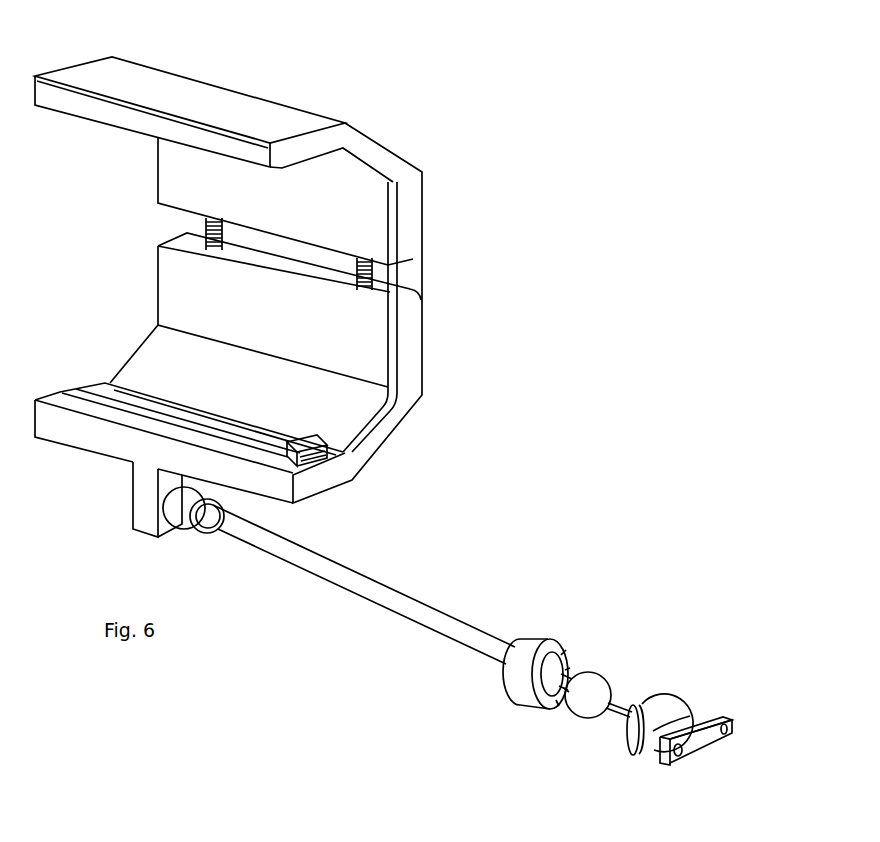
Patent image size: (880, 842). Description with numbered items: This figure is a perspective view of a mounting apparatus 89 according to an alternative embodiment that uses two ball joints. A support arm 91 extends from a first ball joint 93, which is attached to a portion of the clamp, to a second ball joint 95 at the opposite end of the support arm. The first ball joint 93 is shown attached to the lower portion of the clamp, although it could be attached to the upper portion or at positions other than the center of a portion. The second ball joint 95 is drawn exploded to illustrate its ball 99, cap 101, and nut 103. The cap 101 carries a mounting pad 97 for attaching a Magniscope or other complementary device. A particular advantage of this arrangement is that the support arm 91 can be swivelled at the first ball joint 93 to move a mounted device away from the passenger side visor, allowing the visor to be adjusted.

The mounting apparatus 89 is at (374, 62).
The support arm 91 is at (371, 582).
The first ball joint 93 is at (182, 523).
The second ball joint 95 is at (616, 681).
The mounting pad 97 is at (720, 717).
The ball 99 is at (587, 678).
The cap 101 is at (670, 702).
The nut 103 is at (545, 650).